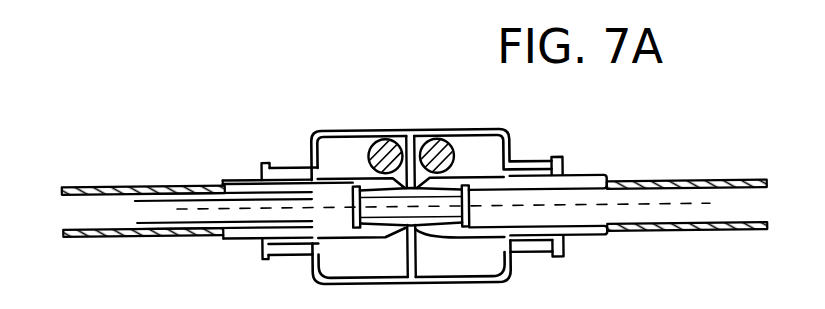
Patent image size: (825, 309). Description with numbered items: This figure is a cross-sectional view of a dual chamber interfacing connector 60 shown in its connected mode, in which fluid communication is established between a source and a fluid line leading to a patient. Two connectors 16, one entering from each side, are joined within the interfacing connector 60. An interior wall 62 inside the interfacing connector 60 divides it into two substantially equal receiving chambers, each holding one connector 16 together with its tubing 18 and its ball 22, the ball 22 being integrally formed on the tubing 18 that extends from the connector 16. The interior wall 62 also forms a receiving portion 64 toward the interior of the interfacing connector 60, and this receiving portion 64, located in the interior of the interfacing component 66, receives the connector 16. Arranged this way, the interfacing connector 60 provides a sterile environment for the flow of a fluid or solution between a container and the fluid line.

The connector 16 is at (262, 171).
The tubing 18 is at (314, 166).
The ball 22 is at (387, 141).
The dual chamber interfacing connector 60 is at (309, 129).
The interior wall 62 is at (410, 131).
The receiving portion 64 is at (400, 231).
The interfacing component 66 is at (236, 186).